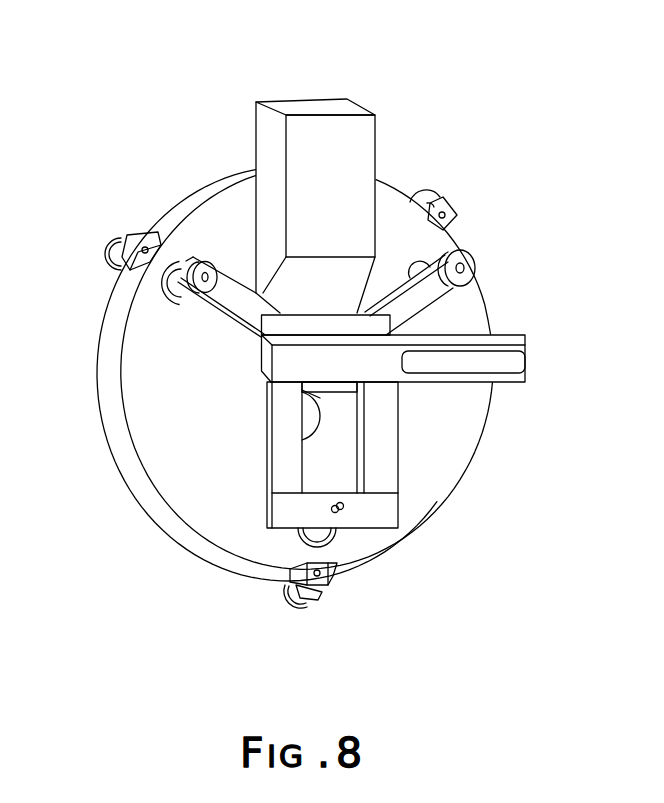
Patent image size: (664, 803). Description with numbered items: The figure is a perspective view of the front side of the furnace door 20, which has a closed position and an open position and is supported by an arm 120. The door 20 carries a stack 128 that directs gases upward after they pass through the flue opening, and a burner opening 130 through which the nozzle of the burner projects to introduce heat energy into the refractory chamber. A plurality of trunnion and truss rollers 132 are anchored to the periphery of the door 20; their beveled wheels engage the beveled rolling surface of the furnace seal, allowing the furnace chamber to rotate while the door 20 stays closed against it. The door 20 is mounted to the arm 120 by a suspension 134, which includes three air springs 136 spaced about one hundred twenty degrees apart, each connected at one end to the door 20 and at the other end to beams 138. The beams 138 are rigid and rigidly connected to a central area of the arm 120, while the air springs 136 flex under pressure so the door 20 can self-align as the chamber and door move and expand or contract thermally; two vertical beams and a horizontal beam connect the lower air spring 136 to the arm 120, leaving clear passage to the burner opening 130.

The door 20 is at (188, 108).
The arm 120 is at (528, 333).
The stack 128 is at (358, 158).
The burner opening 130 is at (313, 415).
The trunnion and truss rollers 132 is at (130, 242).
The suspension 134 is at (234, 313).
The air springs 136 is at (165, 300).
The beams 138 is at (287, 462).